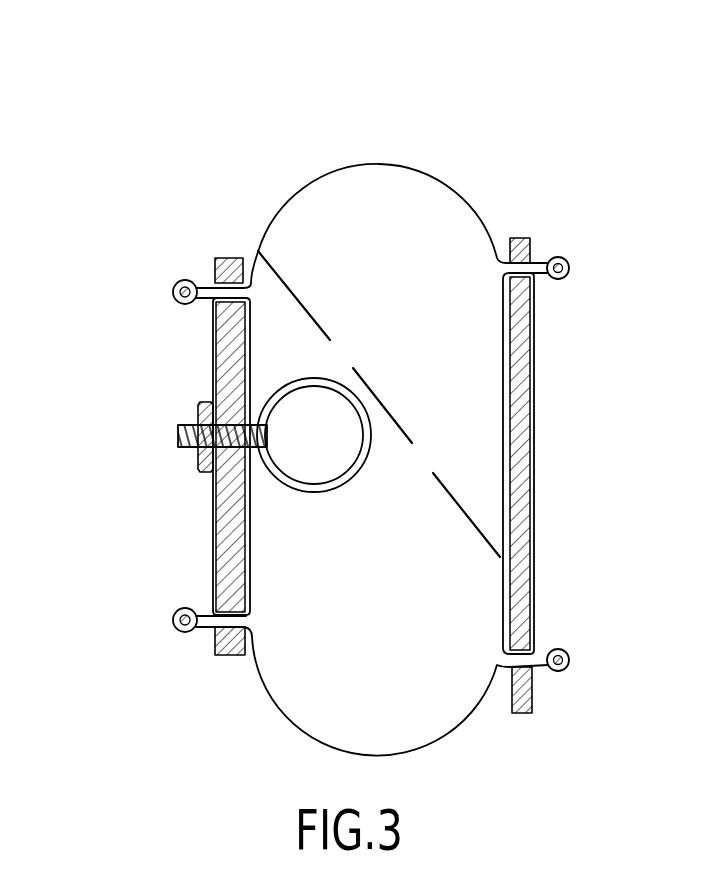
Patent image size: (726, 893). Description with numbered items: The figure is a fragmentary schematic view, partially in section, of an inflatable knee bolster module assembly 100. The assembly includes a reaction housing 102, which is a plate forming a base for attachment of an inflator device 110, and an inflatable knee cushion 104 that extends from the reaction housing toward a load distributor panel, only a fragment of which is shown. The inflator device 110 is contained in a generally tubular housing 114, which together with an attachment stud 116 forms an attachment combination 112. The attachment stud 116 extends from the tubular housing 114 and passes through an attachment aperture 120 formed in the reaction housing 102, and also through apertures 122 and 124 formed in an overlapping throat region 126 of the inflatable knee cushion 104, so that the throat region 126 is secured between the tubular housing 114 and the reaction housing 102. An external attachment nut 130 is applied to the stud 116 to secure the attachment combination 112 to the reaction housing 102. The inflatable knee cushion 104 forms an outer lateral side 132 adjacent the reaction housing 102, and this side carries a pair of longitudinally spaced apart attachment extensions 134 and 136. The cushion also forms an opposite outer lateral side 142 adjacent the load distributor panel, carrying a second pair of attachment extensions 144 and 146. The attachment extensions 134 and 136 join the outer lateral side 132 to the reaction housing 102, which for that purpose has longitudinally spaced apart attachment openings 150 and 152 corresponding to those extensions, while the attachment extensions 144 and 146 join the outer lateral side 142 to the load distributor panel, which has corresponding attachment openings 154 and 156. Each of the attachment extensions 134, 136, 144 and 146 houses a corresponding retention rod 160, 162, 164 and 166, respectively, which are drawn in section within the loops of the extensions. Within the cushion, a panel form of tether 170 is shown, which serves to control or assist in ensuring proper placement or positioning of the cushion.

The inflatable knee bolster module assembly 100 is at (465, 100).
The reaction housing 102 is at (232, 268).
The inflatable knee cushion 104 is at (340, 164).
The inflator device 110 is at (318, 492).
The attachment combination 112 is at (276, 518).
The tubular housing 114 is at (353, 478).
The attachment stud 116 is at (178, 434).
The attachment aperture 120 is at (232, 458).
The aperture 122 is at (237, 458).
The aperture 124 is at (243, 422).
The overlapping throat region 126 is at (265, 380).
The external attachment nut 130 is at (198, 408).
The outer lateral side 132 is at (270, 290).
The attachment extension 134 is at (180, 290).
The attachment extension 136 is at (178, 630).
The outer lateral side 142 is at (485, 424).
The attachment extension 144 is at (570, 262).
The attachment extension 146 is at (570, 660).
The attachment opening 150 is at (228, 275).
The attachment opening 152 is at (228, 640).
The attachment opening 154 is at (523, 287).
The attachment opening 156 is at (520, 680).
The retention rod 160 is at (176, 300).
The retention rod 162 is at (173, 620).
The retention rod 164 is at (556, 258).
The retention rod 166 is at (560, 650).
The tether 170 is at (462, 505).